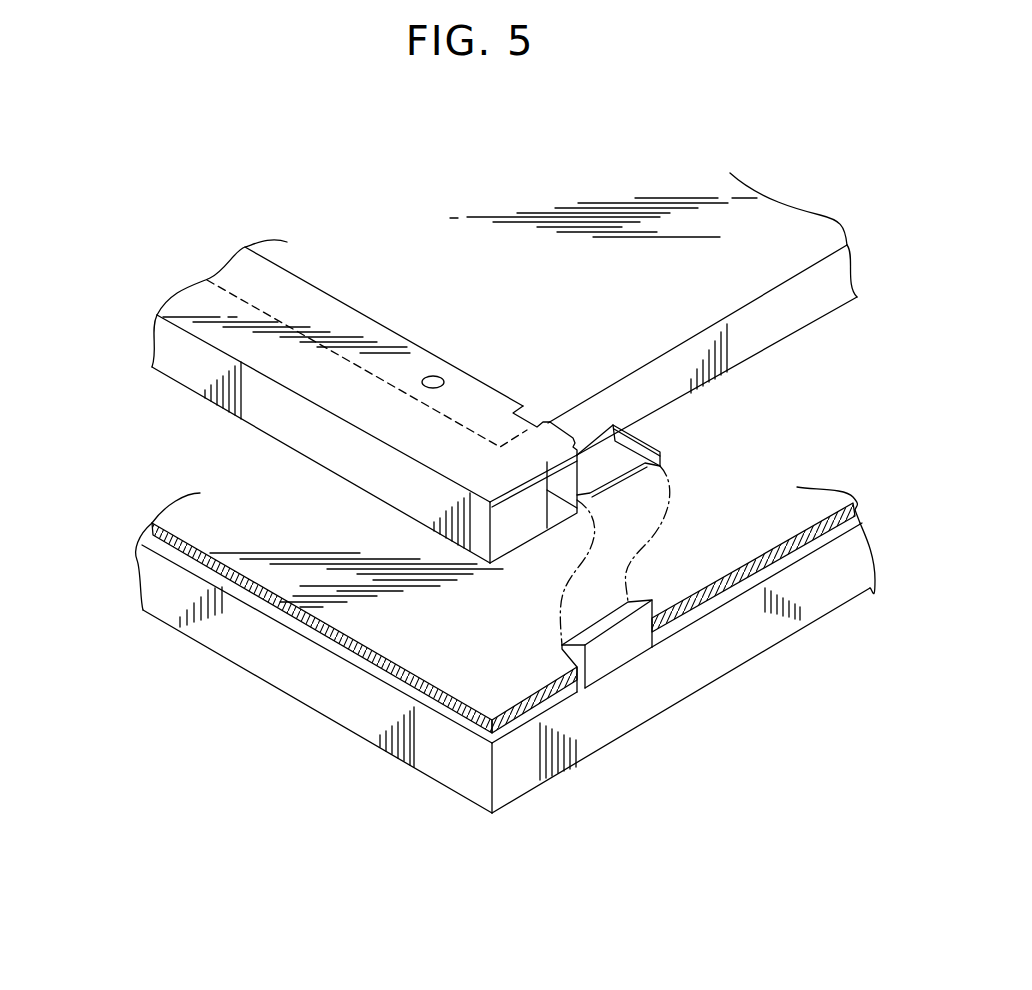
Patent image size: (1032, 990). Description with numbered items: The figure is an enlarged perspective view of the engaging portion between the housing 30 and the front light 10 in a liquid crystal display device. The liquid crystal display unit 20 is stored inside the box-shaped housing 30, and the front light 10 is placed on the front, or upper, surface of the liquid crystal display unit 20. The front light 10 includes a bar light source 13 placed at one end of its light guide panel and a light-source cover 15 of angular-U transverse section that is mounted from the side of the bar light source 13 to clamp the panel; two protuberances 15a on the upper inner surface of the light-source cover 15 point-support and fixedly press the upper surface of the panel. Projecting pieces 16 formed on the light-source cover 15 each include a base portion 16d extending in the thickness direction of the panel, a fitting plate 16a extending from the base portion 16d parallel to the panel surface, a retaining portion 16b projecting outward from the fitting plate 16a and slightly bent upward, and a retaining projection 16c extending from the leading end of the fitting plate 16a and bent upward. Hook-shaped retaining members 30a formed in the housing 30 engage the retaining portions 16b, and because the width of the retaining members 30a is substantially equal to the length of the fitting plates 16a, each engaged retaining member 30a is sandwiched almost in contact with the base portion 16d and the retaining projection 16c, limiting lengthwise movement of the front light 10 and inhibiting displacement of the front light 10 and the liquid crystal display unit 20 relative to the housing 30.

The front light 10 is at (779, 241).
The bar light source 13 is at (210, 313).
The light-source cover 15 is at (165, 348).
The protuberances 15a is at (440, 377).
The projecting pieces 16 is at (693, 379).
The fitting plate 16a is at (600, 452).
The retaining portion 16b is at (647, 473).
The retaining projection 16c is at (647, 440).
The base portion 16d is at (563, 480).
The liquid crystal display unit 20 is at (783, 498).
The housing 30 is at (823, 594).
The retaining members 30a is at (627, 660).